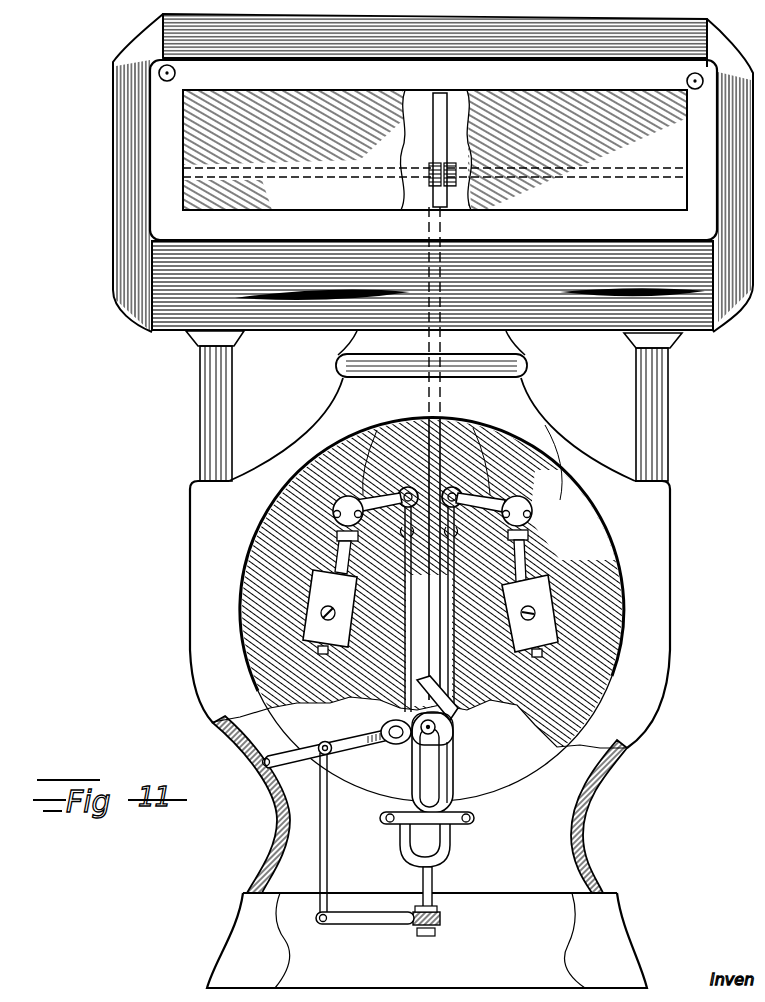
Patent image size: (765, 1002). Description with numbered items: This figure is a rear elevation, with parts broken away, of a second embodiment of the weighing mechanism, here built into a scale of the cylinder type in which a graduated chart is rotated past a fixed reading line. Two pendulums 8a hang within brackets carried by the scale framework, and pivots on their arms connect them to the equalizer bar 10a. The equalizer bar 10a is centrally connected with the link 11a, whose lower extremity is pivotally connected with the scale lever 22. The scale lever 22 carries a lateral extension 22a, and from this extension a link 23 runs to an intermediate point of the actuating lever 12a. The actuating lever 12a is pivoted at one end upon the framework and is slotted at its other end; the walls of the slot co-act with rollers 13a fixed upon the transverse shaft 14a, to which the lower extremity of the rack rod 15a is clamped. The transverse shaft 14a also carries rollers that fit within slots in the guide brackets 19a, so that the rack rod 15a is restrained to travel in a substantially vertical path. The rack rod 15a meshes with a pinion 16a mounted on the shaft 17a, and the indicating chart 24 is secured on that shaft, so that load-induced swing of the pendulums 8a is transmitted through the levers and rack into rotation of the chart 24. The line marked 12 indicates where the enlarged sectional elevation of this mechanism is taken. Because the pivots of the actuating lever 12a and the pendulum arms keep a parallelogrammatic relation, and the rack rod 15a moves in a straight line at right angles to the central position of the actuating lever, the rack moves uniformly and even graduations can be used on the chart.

The pendulum 8a is at (318, 574).
The equalizer bar 10a is at (455, 858).
The link 11a is at (433, 880).
The section line 12 is at (445, 686).
The actuating lever 12a is at (365, 748).
The roller 13a is at (458, 733).
The transverse shaft 14a is at (405, 722).
The rack rod 15a is at (465, 690).
The pinion 16a is at (450, 172).
The shaft 17a is at (418, 172).
The guide bracket 19a is at (442, 773).
The scale lever 22 is at (442, 917).
The lateral extension 22a is at (381, 921).
The link 23 is at (329, 833).
The indicating chart 24 is at (388, 197).